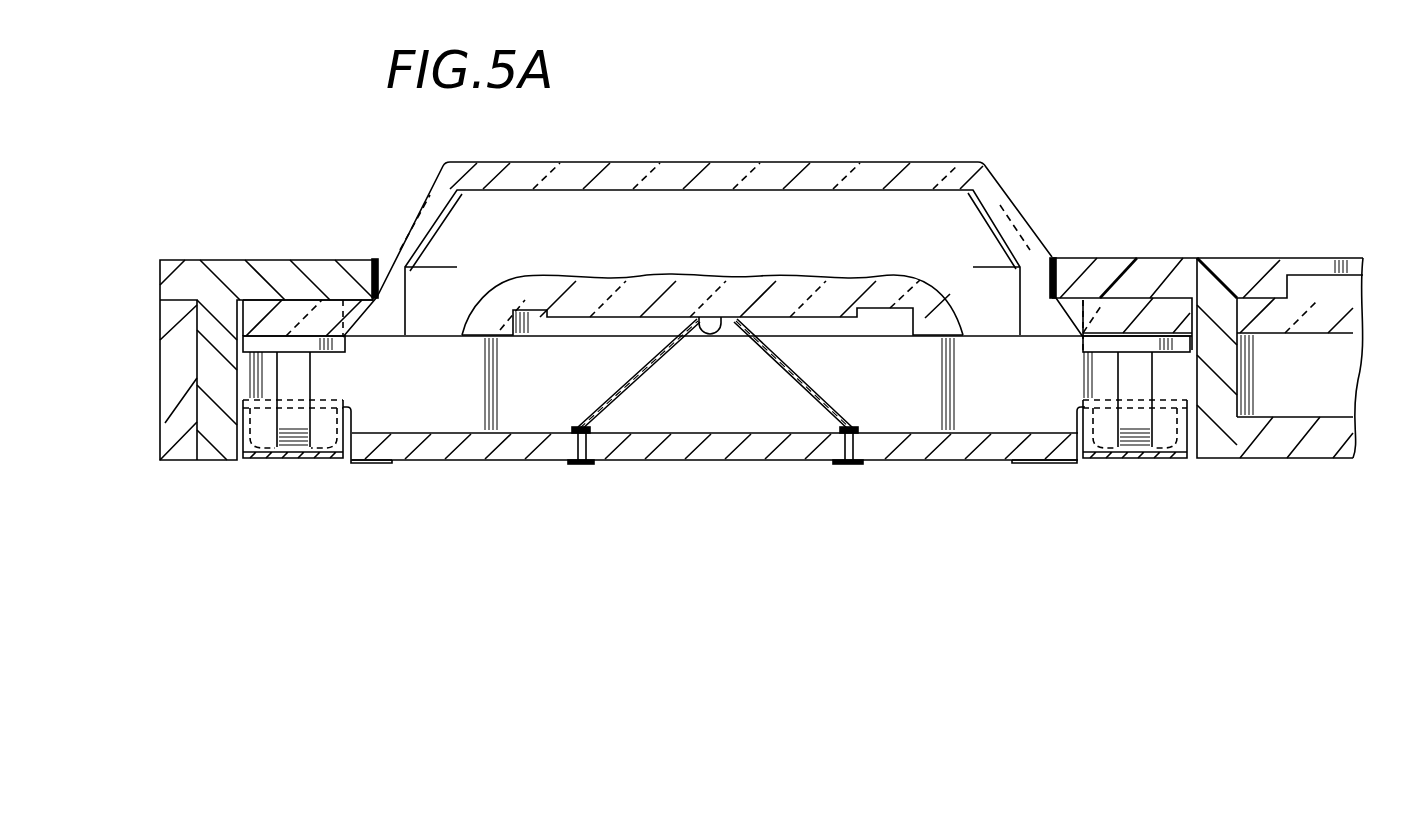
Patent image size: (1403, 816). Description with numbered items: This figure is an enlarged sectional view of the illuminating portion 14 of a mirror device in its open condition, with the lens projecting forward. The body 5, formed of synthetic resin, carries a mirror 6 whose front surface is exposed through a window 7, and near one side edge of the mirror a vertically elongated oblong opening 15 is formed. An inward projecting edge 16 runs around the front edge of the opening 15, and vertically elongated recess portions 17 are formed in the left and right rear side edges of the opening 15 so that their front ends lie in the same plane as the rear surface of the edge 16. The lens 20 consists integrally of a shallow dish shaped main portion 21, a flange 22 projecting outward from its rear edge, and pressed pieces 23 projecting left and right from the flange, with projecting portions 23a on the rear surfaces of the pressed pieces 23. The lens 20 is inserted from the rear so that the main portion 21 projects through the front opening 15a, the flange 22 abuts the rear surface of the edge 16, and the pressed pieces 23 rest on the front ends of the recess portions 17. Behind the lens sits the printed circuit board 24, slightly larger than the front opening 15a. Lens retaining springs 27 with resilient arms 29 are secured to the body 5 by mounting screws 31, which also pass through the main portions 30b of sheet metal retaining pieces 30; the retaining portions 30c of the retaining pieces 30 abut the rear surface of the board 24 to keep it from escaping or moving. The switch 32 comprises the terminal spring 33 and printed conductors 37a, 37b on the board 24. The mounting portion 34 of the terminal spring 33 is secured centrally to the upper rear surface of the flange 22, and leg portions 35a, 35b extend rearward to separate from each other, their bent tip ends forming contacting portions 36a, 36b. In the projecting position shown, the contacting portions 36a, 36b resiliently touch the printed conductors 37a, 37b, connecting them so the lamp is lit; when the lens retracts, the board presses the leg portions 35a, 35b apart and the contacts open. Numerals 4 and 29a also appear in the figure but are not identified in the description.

The push button switch 4 is at (1205, 187).
The body 5 is at (1297, 462).
The mirror 6 is at (1327, 310).
The window 7 is at (1295, 282).
The illuminating portion 14 is at (770, 163).
The opening 15 is at (378, 265).
The front opening 15a is at (379, 258).
The inward projecting edge 16 is at (350, 270).
The recess portion 17 is at (240, 368).
The lens 20 is at (692, 160).
The main portion 21 is at (637, 160).
The flange 22 is at (350, 310).
The pressed piece 23 is at (283, 313).
The projecting portion 23a is at (232, 325).
The printed circuit board 24 is at (492, 465).
The lens retaining spring 27 is at (297, 462).
The resilient arm 29 is at (307, 385).
The holder flange 29a is at (293, 363).
The retaining piece 30 is at (383, 465).
The main portion 30b is at (258, 452).
The retaining portion 30c is at (357, 467).
The mounting screw 31 is at (263, 462).
The switch 32 is at (642, 373).
The terminal spring 33 is at (618, 395).
The mounting portion 34 is at (716, 327).
The leg portion 35a is at (633, 378).
The leg portion 35b is at (787, 367).
The contacting portion 36a is at (577, 425).
The contacting portion 36b is at (852, 427).
The printed conductor 37a is at (578, 466).
The printed conductor 37b is at (833, 466).